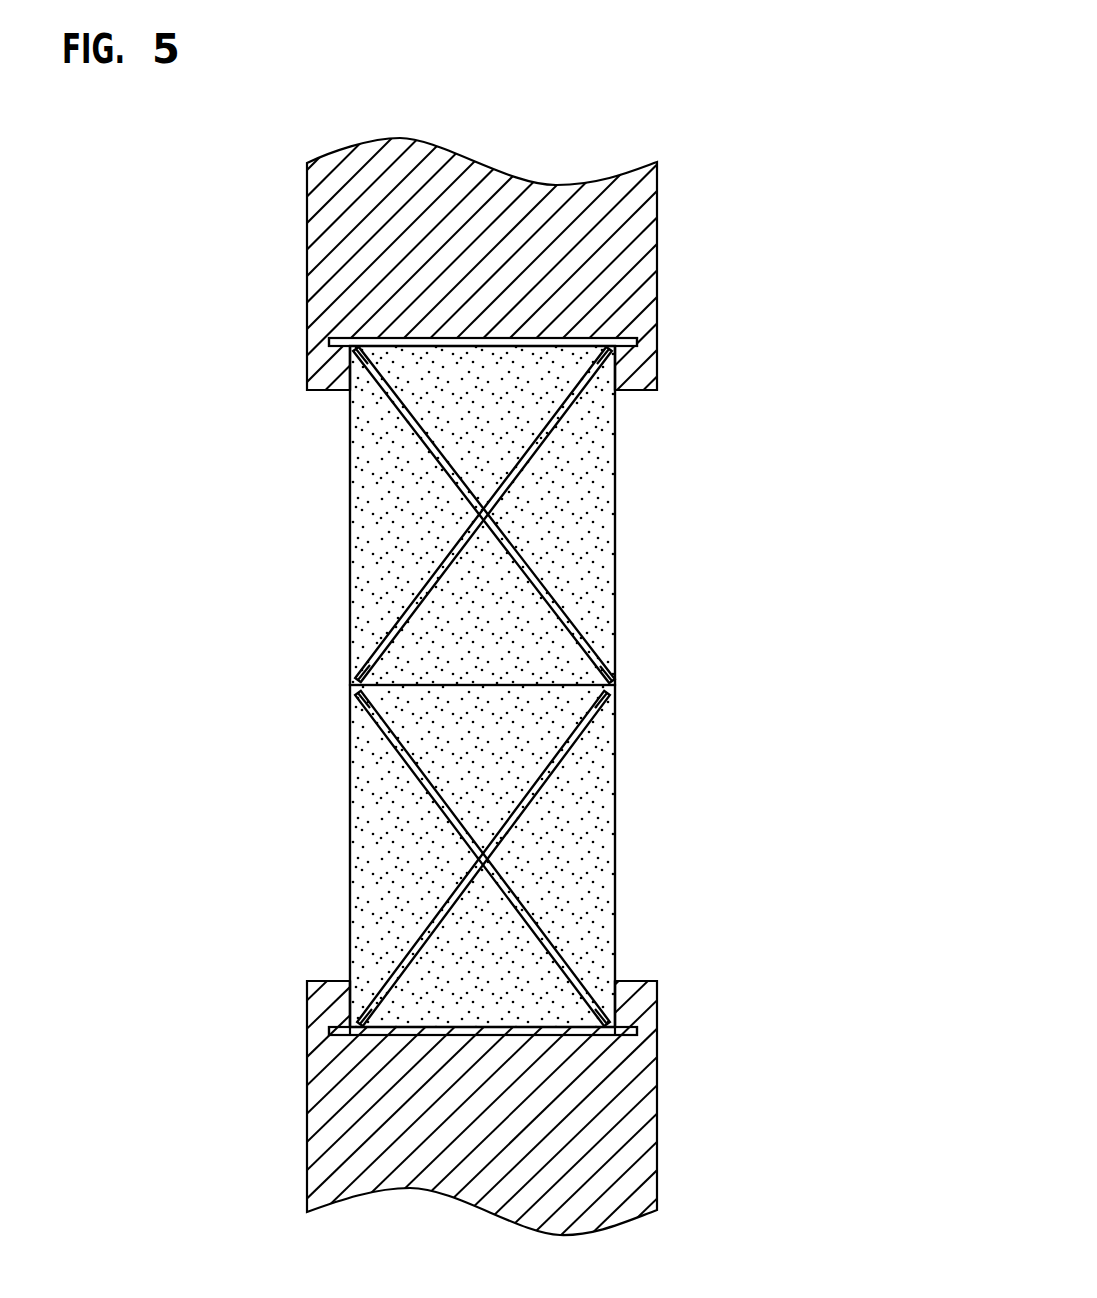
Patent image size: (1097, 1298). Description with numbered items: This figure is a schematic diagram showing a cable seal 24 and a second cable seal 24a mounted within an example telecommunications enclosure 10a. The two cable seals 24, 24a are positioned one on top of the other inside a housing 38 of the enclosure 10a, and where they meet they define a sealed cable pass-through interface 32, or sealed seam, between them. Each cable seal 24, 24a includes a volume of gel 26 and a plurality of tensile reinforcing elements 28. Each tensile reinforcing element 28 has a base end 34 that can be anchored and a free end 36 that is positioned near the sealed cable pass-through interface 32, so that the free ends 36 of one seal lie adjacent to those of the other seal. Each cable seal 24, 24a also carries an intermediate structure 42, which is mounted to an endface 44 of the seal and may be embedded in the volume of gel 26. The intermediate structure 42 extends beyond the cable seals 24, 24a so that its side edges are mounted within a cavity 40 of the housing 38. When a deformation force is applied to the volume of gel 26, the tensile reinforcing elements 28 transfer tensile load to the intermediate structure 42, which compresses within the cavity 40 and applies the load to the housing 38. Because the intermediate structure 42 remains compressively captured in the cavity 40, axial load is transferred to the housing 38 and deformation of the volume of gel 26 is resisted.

The enclosure 10a is at (738, 124).
The housing 38 is at (658, 240).
The intermediate structure 42 is at (637, 337).
The cavity 40 is at (330, 346).
The base end 34 is at (617, 358).
The endface 44 is at (482, 347).
The second cable seal 24a is at (632, 529).
The cable seal 24 is at (640, 834).
The volume of gel 26 is at (587, 594).
The tensile reinforcing elements 28 is at (430, 447).
The sealed cable pass-through interface 32 is at (435, 685).
The free end 36 is at (612, 683).